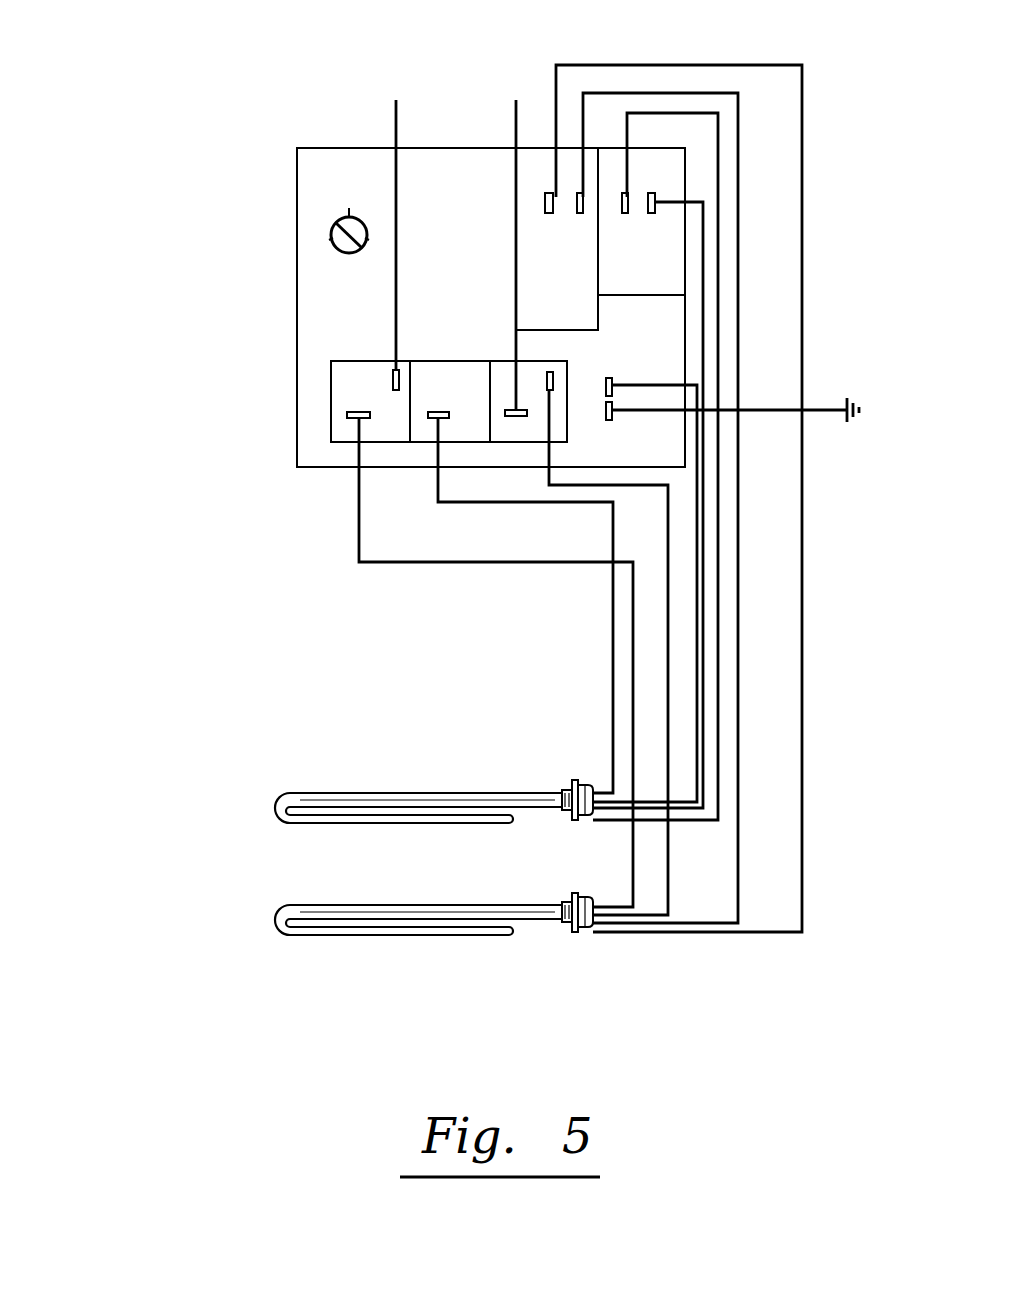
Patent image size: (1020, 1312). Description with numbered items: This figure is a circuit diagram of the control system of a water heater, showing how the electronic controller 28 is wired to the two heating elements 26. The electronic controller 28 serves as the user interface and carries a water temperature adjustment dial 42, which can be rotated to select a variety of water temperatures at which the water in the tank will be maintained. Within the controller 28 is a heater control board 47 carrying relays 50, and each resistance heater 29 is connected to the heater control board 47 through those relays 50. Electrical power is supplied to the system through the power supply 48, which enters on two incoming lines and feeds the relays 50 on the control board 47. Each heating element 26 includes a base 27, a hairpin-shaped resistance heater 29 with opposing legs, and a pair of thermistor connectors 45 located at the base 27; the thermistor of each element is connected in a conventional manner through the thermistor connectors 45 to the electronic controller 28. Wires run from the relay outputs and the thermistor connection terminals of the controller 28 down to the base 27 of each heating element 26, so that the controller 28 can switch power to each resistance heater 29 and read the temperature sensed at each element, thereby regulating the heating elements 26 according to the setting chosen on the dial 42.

The heating element 26 is at (405, 851).
The base 27 is at (585, 780).
The electronic controller 28 is at (402, 235).
The resistance heater 29 is at (396, 793).
The water temperature adjustment dial 42 is at (340, 258).
The thermistor connectors 45 is at (593, 893).
The heater control board 47 is at (386, 358).
The power supply 48 is at (511, 84).
The relays 50 is at (500, 363).